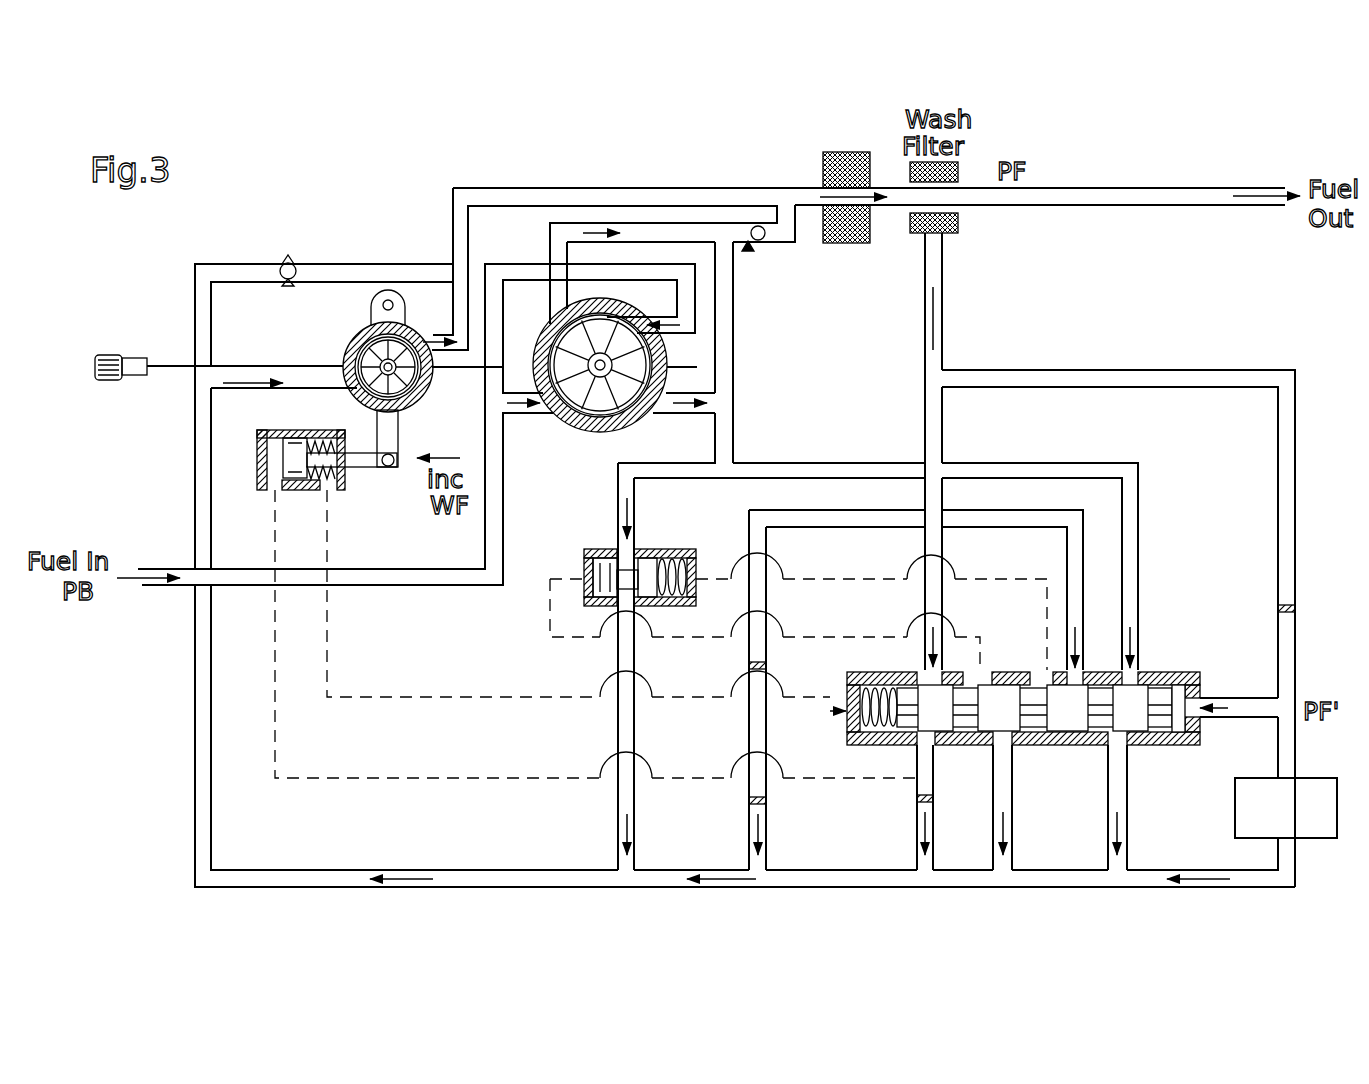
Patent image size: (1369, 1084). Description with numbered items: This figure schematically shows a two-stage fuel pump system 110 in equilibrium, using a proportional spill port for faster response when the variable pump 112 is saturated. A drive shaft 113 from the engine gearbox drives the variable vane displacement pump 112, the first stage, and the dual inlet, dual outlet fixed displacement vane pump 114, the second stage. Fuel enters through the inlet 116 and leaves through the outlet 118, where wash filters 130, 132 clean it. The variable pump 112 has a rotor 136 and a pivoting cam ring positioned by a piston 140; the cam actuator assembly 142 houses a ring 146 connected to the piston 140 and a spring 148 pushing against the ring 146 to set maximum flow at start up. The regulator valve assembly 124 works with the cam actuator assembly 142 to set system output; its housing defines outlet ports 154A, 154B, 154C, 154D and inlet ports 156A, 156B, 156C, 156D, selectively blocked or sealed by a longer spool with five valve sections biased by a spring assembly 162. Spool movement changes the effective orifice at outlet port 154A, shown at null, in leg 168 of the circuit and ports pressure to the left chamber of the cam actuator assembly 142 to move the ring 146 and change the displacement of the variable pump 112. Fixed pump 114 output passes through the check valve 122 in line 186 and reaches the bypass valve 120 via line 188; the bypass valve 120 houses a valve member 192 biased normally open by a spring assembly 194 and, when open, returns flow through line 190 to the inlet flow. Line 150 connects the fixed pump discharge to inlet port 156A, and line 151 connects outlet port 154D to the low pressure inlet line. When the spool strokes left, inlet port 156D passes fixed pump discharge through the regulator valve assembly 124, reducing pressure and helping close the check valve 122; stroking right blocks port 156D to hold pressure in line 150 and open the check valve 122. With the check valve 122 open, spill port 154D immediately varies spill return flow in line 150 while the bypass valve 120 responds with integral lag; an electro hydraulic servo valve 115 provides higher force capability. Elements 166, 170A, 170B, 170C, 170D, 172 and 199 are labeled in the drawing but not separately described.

The two-stage system 110 is at (508, 168).
The variable pump 112 is at (356, 322).
The drive shaft 113 is at (98, 356).
The fixed pump 114 is at (592, 432).
The electro hydraulic servo valve 115 is at (1310, 838).
The inlet 116 is at (193, 570).
The outlet 118 is at (1218, 186).
The bypass valve 120 is at (675, 545).
The check valve 122 is at (752, 249).
The regulator valve assembly 124 is at (1205, 680).
The wash filter 130 is at (848, 150).
The wash filter 132 is at (958, 222).
The rotor 136 is at (420, 375).
The piston 140 is at (386, 470).
The cam actuator assembly 142 is at (286, 428).
The ring 146 is at (293, 440).
The spring 148 is at (318, 490).
The line 150 is at (1105, 462).
The line 151 is at (1127, 848).
The outlet port 154A is at (917, 747).
The outlet port 154B is at (982, 668).
The outlet port 154C is at (1032, 670).
The outlet port 154D is at (1118, 746).
The inlet port 156A is at (925, 669).
The inlet port 156B is at (1078, 668).
The inlet port 156C is at (1003, 747).
The inlet port 156D is at (1132, 670).
The spring assembly 162 is at (860, 698).
The pressure sensing line 166 is at (352, 697).
The leg 168 is at (290, 778).
The orifice 170A is at (749, 666).
The orifice 170B is at (749, 801).
The orifice 170C is at (917, 799).
The orifice 170D is at (1281, 605).
The pressure line 172 is at (803, 528).
The line 186 is at (680, 414).
The line 188 is at (734, 330).
The line 190 is at (618, 830).
The valve member 192 is at (608, 548).
The spring assembly 194 is at (672, 603).
The bypass line 199 is at (1215, 370).